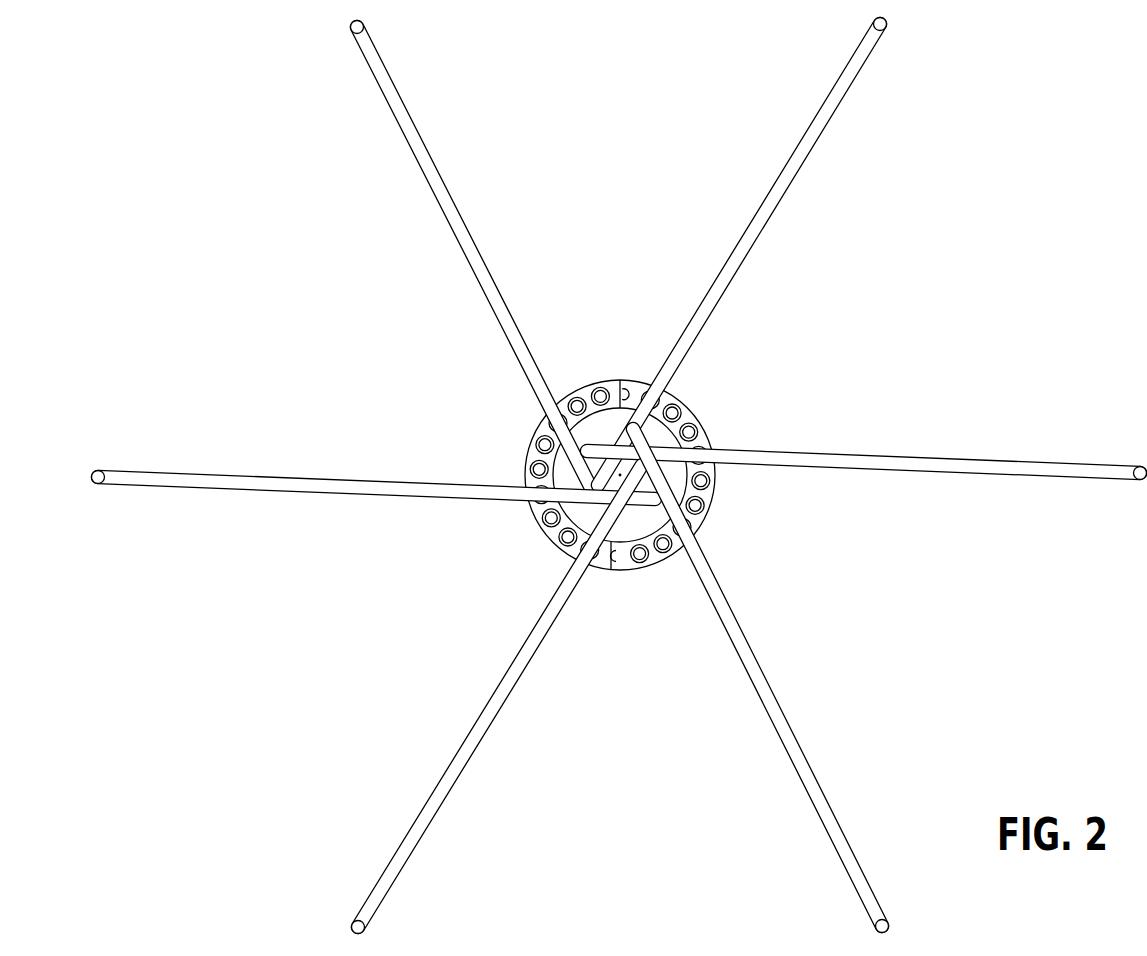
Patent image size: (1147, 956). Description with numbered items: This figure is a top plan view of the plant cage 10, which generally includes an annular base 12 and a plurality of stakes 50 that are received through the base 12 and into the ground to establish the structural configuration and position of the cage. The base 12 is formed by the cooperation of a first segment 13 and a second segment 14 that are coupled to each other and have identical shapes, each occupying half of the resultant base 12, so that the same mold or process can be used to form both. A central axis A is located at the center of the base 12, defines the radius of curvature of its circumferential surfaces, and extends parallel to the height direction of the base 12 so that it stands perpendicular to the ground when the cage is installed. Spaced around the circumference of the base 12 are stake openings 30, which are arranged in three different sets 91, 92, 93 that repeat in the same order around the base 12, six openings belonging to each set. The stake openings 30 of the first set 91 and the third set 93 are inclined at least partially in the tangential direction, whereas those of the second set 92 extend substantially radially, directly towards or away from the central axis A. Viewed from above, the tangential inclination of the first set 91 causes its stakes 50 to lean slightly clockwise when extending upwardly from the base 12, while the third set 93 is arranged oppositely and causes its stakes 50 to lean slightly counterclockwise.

The plant cage 10 is at (246, 229).
The base 12 is at (706, 414).
The first segment 13 is at (593, 375).
The second segment 14 is at (637, 372).
The stake openings 30 is at (565, 513).
The first set 91 is at (592, 566).
The second set 92 is at (557, 547).
The third set 93 is at (540, 526).
The stakes 50 is at (459, 222).
The central axis A is at (620, 477).